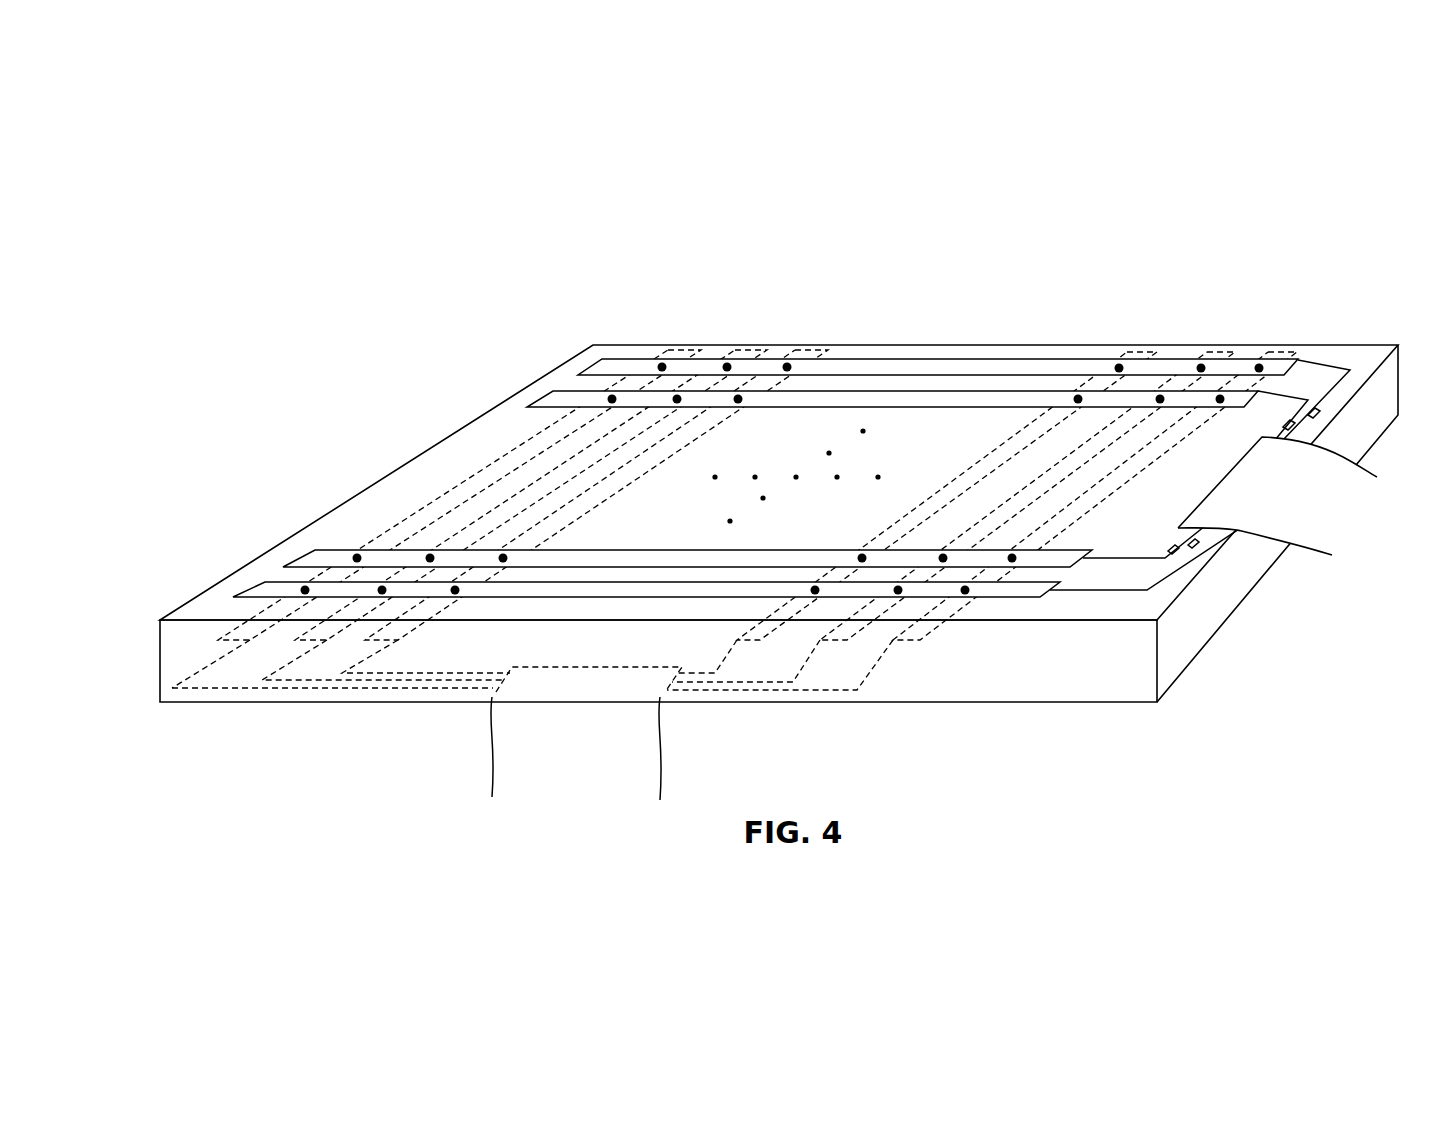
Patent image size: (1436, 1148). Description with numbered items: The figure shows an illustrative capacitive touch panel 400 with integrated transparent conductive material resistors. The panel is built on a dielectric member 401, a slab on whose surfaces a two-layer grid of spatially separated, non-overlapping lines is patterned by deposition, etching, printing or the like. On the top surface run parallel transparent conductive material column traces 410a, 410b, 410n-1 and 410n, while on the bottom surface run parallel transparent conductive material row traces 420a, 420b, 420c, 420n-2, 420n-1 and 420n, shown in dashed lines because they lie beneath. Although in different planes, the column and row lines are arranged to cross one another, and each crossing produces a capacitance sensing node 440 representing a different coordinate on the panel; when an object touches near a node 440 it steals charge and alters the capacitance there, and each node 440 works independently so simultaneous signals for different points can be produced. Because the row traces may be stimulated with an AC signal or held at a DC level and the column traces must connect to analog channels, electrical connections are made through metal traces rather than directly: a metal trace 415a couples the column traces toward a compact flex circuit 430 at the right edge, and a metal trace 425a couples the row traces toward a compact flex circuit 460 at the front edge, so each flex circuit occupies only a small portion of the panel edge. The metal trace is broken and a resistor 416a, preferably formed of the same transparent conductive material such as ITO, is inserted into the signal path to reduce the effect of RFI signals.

The capacitive touch panel 400 is at (896, 267).
The dielectric member 401 is at (1068, 688).
The column trace 410a is at (600, 357).
The column trace 410b is at (555, 399).
The column trace 410n-1 is at (315, 547).
The column trace 410n is at (266, 590).
The metal trace 415a is at (1325, 362).
The resistor 416a is at (1322, 416).
The row trace 420a is at (240, 633).
The row trace 420b is at (318, 640).
The row trace 420c is at (392, 640).
The row trace 420n-2 is at (757, 640).
The row trace 420n-1 is at (841, 640).
The row trace 420n is at (912, 640).
The metal trace 425a is at (427, 697).
The flex circuit 430 is at (1307, 553).
The capacitance sensing node 440 is at (723, 360).
The flex circuit 460 is at (490, 758).